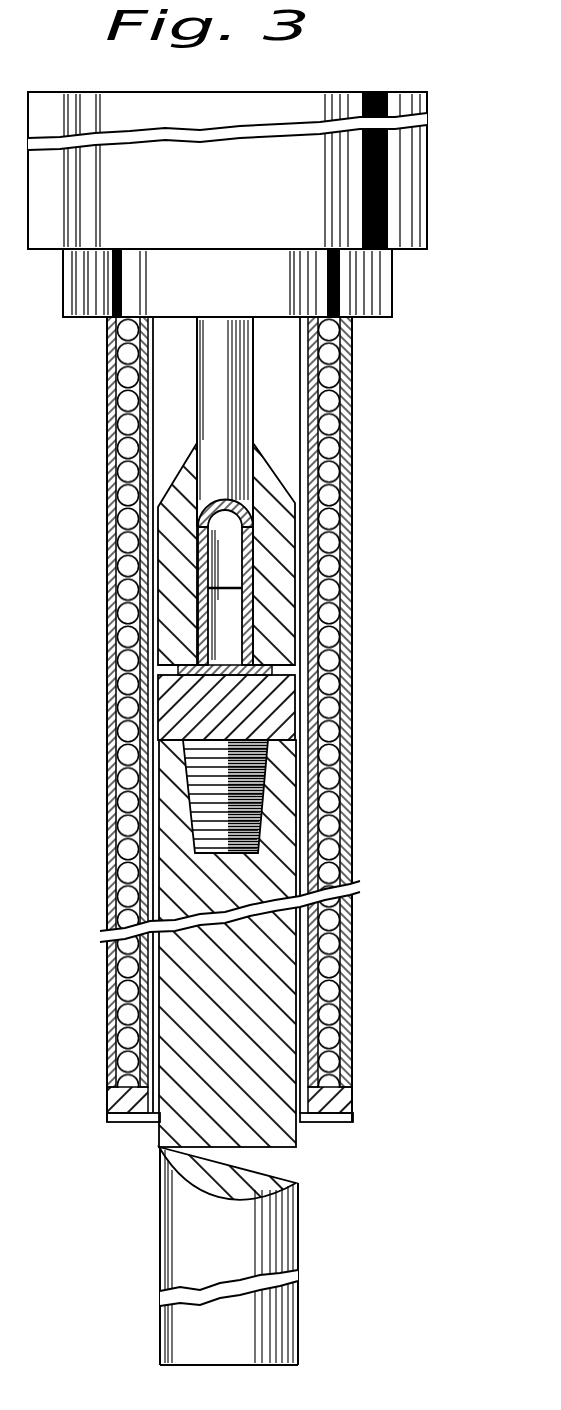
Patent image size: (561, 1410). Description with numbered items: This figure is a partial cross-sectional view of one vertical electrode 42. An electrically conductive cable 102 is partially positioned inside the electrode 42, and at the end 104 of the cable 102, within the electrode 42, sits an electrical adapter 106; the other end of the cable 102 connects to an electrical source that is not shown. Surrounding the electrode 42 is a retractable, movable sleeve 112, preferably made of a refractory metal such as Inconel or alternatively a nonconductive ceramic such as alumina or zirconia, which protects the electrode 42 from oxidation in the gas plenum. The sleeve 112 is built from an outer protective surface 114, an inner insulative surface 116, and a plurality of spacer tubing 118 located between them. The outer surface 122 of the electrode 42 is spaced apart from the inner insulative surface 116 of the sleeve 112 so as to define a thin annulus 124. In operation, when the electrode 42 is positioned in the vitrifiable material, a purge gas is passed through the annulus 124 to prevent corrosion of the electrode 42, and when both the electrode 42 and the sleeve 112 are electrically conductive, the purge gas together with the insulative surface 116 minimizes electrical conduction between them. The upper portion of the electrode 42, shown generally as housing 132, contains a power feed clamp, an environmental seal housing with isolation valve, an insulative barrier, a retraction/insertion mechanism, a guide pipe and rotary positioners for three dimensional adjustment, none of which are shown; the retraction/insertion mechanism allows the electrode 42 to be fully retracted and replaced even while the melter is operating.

The housing 132 is at (405, 210).
The electrically conductive cable 102 is at (218, 380).
The end of cable 104 is at (253, 628).
The electrical adapter 106 is at (267, 767).
The retractable/movable sleeve 112 is at (90, 702).
The outer protective surface 114 is at (108, 657).
The inner insulative surface 116 is at (127, 550).
The spacer tubing 118 is at (127, 828).
The outer surface 122 is at (298, 812).
The thin annulus 124 is at (283, 821).
The vertical electrode 42 is at (326, 1234).